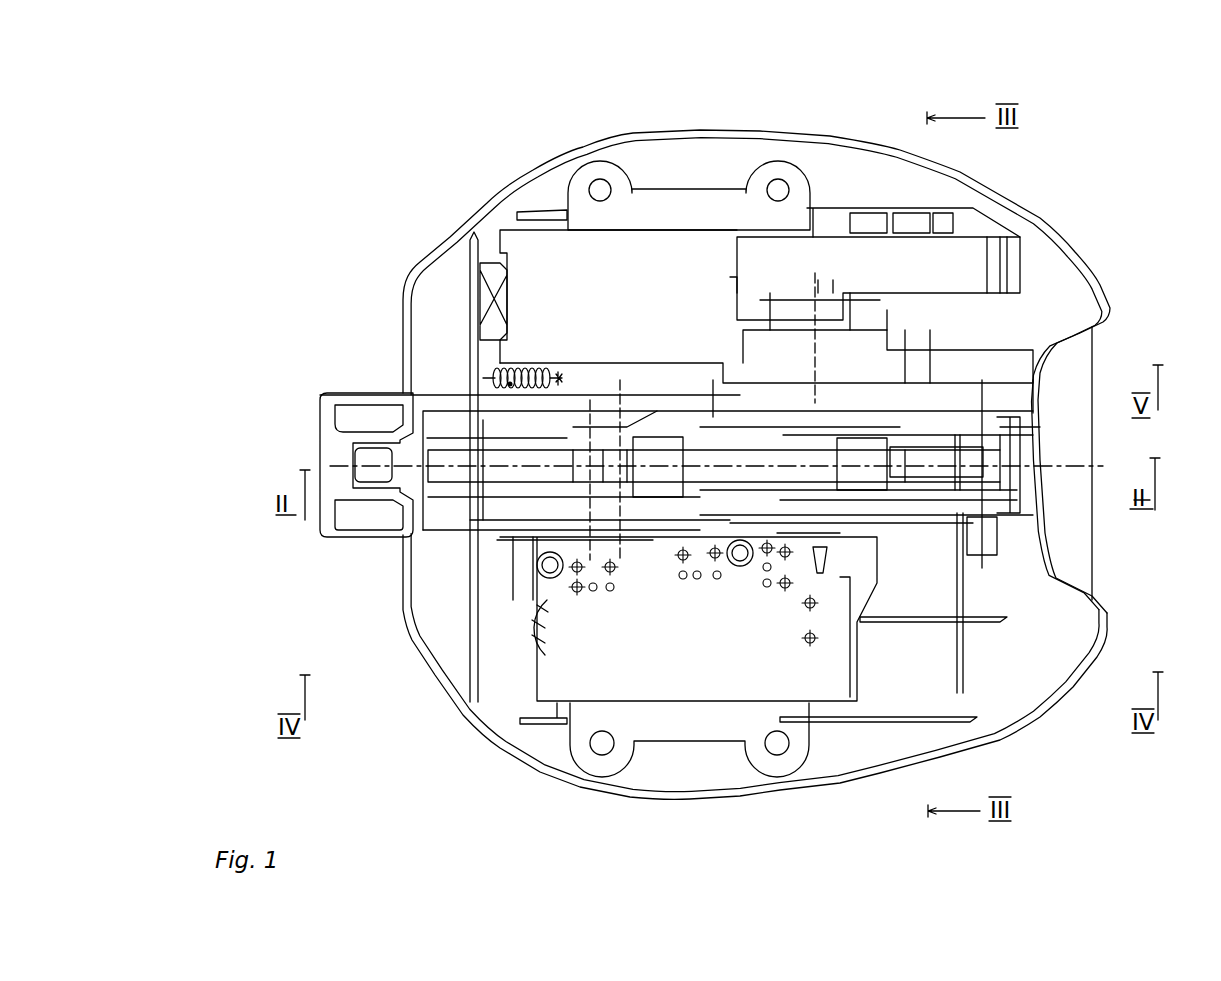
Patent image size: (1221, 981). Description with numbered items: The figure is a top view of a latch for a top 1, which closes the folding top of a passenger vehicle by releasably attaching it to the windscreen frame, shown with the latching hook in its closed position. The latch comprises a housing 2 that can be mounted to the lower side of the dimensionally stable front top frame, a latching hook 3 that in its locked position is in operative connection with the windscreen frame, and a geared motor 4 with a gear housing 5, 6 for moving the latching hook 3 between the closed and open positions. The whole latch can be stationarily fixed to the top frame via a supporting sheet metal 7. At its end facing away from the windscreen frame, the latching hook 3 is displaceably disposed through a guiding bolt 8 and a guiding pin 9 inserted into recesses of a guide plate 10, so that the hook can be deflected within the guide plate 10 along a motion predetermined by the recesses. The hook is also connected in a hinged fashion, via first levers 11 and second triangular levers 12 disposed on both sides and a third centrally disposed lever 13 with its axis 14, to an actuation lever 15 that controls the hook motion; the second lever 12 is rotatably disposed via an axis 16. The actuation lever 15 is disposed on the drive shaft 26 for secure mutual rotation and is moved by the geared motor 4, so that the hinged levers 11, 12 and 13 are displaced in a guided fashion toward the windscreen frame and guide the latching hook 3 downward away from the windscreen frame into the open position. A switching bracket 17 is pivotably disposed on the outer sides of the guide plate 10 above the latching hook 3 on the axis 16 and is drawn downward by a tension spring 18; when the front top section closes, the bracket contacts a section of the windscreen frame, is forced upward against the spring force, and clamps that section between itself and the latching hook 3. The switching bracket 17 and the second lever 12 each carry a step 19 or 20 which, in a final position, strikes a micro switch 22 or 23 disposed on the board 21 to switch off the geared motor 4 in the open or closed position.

The latch for a top 1 is at (282, 274).
The housing 2 is at (730, 137).
The latching hook 3 is at (372, 466).
The geared motor 4 is at (840, 255).
The gear housing 5 is at (875, 338).
The gear housing 6 is at (918, 363).
The supporting sheet metal 7 is at (780, 171).
The guiding bolt 8 is at (930, 512).
The guiding pin 9 is at (750, 408).
The guide plate 10 is at (1017, 427).
The first levers 11 is at (985, 508).
The second triangular levers 12 is at (880, 510).
The third lever 13 is at (955, 443).
The axis 14 is at (583, 513).
The actuation lever 15 is at (917, 463).
The axis 16 is at (470, 272).
The switching bracket 17 is at (378, 520).
The tension spring 18 is at (463, 382).
The step 19 is at (585, 533).
The step 20 is at (735, 565).
The board 21 is at (845, 657).
The micro switch 22 is at (593, 548).
The micro switch 23 is at (710, 553).
The drive shaft 26 is at (987, 538).